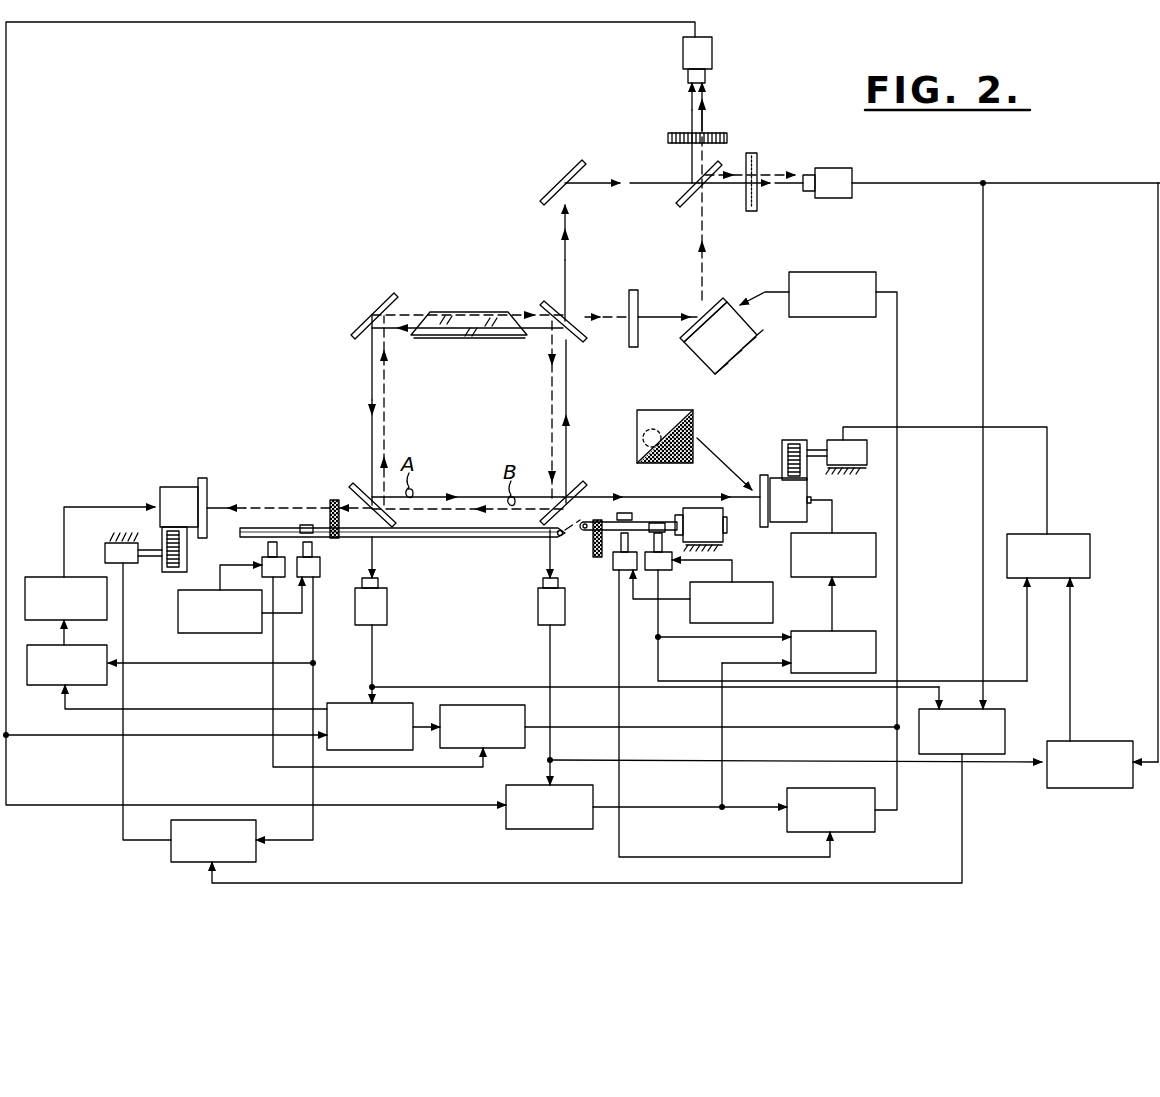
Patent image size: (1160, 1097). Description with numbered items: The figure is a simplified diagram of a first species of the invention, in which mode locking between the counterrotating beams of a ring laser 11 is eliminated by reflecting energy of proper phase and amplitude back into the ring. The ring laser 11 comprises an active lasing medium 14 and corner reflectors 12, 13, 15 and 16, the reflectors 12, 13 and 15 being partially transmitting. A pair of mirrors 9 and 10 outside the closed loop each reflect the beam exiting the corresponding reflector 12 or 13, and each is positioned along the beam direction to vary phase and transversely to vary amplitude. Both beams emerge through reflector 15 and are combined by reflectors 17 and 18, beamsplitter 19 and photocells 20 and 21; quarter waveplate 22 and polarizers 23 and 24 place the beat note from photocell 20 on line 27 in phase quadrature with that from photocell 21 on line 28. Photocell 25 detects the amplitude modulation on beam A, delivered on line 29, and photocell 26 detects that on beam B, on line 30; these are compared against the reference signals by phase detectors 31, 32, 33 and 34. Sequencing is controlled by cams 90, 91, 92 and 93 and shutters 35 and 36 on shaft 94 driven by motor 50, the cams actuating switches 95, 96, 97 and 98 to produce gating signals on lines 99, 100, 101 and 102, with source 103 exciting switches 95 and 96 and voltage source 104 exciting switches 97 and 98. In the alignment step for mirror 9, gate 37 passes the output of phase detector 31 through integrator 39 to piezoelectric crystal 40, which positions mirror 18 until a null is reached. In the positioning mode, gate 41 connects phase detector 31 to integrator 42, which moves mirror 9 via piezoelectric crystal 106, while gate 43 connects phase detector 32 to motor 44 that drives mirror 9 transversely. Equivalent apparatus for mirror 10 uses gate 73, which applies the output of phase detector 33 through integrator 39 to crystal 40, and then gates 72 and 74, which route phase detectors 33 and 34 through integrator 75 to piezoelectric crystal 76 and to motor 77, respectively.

The line 27 is at (315, 22).
The photocell 20 is at (712, 49).
The polarizer 23 is at (668, 138).
The polarizer 24 is at (758, 162).
The reflector 17 is at (552, 182).
The beamsplitter 19 is at (678, 198).
The photocell 21 is at (832, 198).
The line 28 is at (1078, 183).
The active lasing medium 14 is at (468, 312).
The corner reflector 15 is at (553, 300).
The corner reflector 16 is at (366, 316).
The quarter waveplate 22 is at (638, 300).
The reflector 18 is at (723, 300).
The piezoelectric crystal 40 is at (692, 354).
The integrator 39 is at (835, 318).
The ring laser 11 is at (479, 428).
The mirror 10 is at (637, 416).
The motor 77 is at (833, 440).
The corner reflector 12 is at (358, 486).
The corner reflector 13 is at (576, 486).
The shutter 35 is at (332, 500).
The shutter 36 is at (598, 502).
The cam 92 is at (621, 513).
The cam 93 is at (654, 514).
The piezoelectric crystal 76 is at (807, 488).
The integrator 75 is at (842, 533).
The motor 50 is at (728, 532).
The gate 74 is at (1090, 553).
The piezoelectric crystal 106 is at (160, 490).
The mirror 9 is at (210, 484).
The cam 91 is at (306, 524).
The cam 90 is at (240, 537).
The motor 44 is at (104, 553).
The integrator 42 is at (32, 577).
The source 103 is at (178, 616).
The switch 96 is at (320, 566).
The switch 95 is at (287, 577).
The shaft 94 is at (453, 535).
The photocell 25 is at (387, 600).
The photocell 26 is at (534, 604).
The switch 97 is at (613, 567).
The switch 98 is at (672, 566).
The voltage source 104 is at (773, 597).
The gate 72 is at (855, 609).
The line 100 is at (313, 648).
The line 99 is at (260, 654).
The line 29 is at (372, 645).
The line 30 is at (550, 660).
The line 102 is at (664, 664).
The phase detector 31 is at (336, 710).
The gate 37 is at (483, 714).
The line 101 is at (617, 718).
The phase detector 32 is at (1005, 720).
The phase detector 34 is at (1090, 741).
The gate 41 is at (41, 689).
The phase detector 33 is at (550, 829).
The gate 43 is at (256, 857).
The gate 73 is at (875, 828).